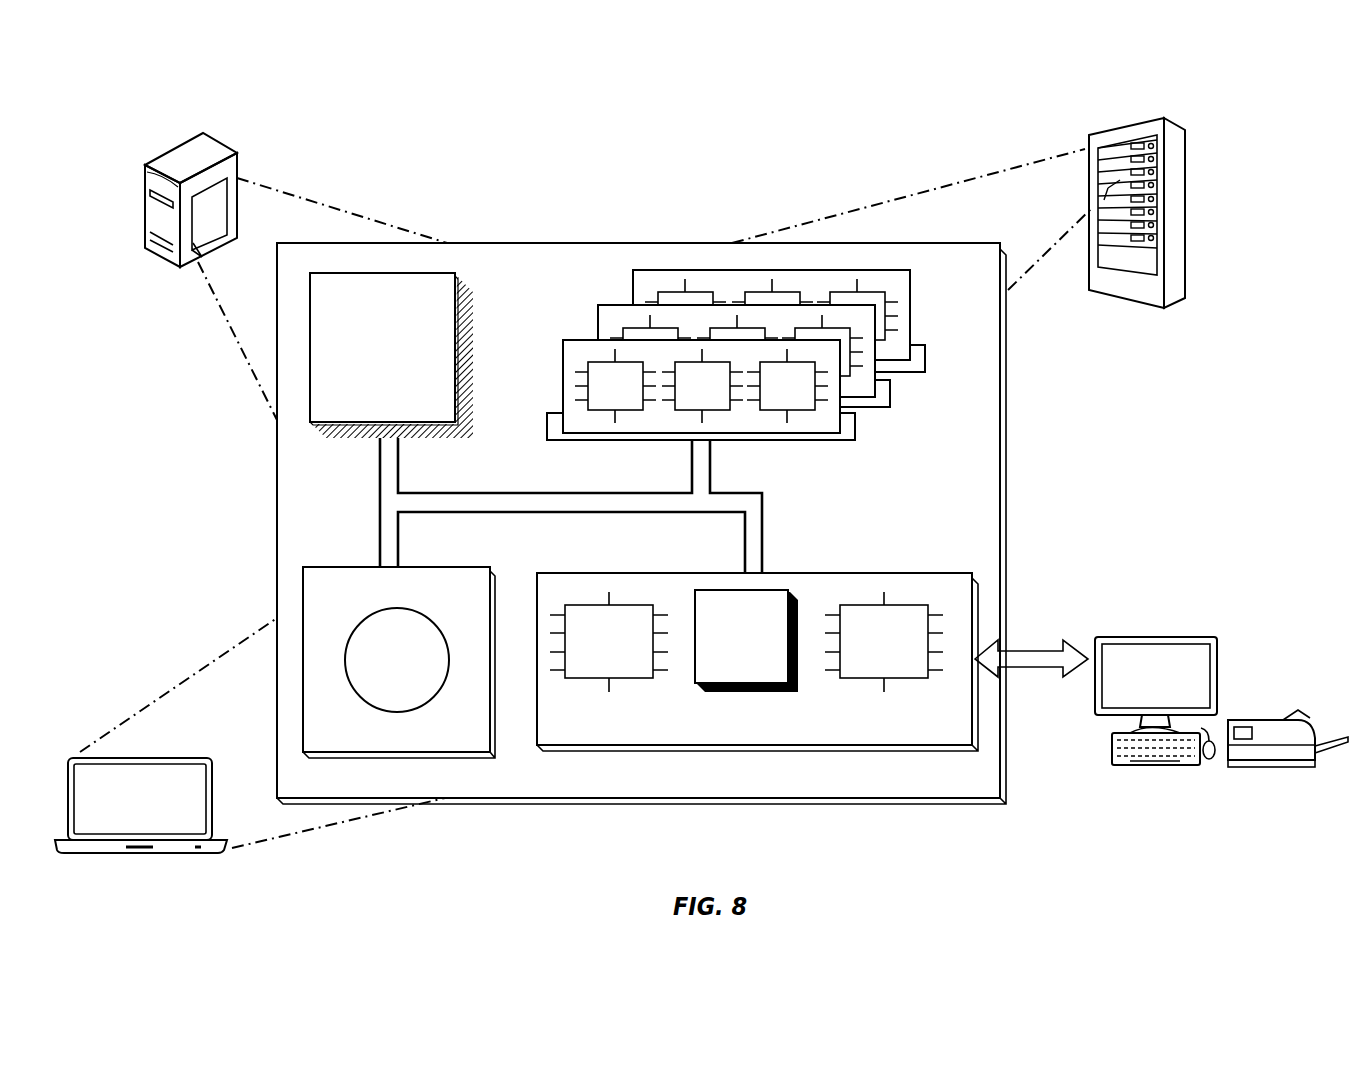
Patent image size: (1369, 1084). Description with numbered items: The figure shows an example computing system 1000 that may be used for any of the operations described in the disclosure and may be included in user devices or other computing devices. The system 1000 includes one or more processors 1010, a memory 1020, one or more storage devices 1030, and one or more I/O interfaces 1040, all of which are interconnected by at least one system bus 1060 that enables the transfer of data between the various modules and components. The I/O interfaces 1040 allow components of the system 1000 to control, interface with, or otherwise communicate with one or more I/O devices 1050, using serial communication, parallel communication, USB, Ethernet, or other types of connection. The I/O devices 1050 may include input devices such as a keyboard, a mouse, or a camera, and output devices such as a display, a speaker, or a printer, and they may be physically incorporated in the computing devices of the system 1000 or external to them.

The system 1000 is at (789, 109).
The processor 1010 is at (382, 273).
The memory 1020 is at (879, 452).
The storage device 1030 is at (435, 568).
The I/O interface 1040 is at (845, 573).
The I/O device 1050 is at (1153, 636).
The system bus 1060 is at (543, 494).